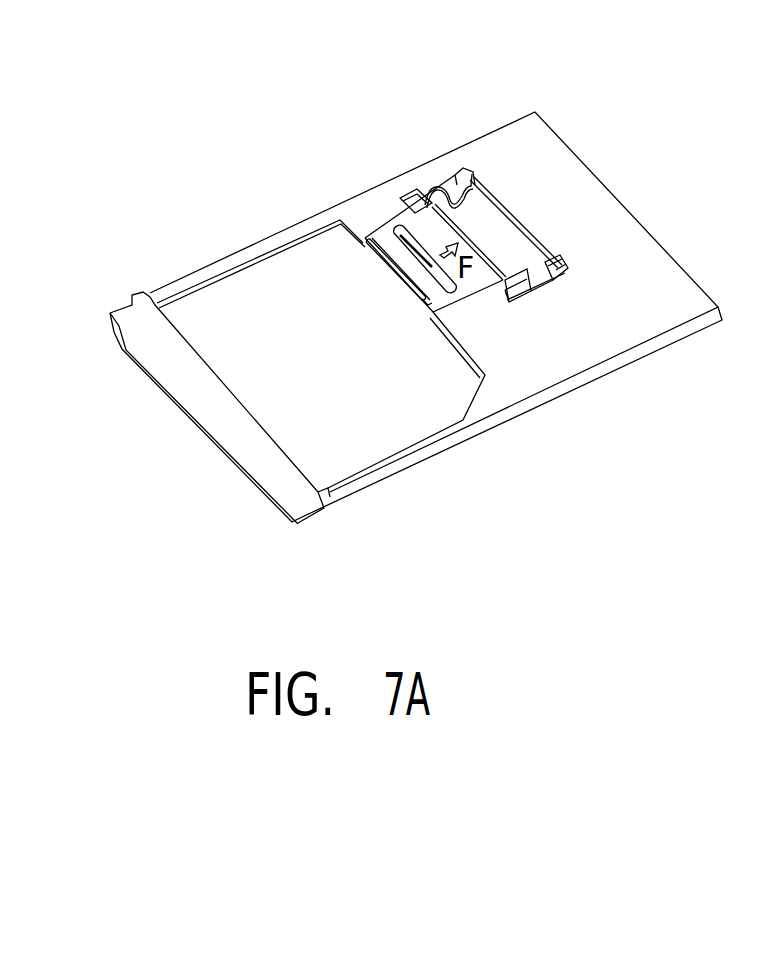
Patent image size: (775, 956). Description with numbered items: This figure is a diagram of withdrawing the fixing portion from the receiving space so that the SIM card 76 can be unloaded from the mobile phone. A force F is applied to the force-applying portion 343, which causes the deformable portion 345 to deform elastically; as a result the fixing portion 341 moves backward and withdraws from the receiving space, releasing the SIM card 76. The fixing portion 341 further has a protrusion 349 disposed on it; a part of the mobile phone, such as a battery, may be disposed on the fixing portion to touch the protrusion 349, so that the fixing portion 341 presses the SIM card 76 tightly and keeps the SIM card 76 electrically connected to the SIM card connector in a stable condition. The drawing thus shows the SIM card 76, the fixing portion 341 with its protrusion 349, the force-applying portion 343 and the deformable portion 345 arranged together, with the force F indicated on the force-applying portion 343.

The SIM card 76 is at (252, 307).
The fixing portion 341 is at (407, 263).
The force-applying portion 343 is at (425, 253).
The deformable portion 345 is at (428, 207).
The protrusion 349 is at (405, 243).